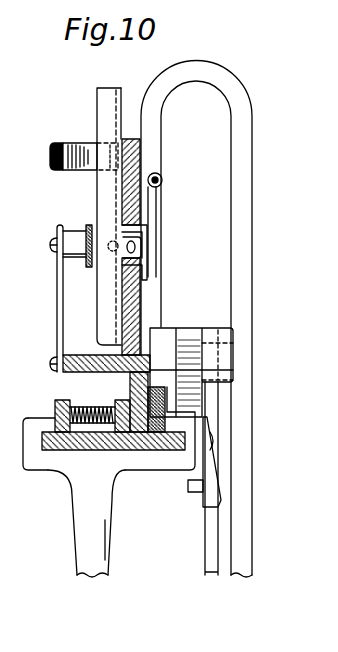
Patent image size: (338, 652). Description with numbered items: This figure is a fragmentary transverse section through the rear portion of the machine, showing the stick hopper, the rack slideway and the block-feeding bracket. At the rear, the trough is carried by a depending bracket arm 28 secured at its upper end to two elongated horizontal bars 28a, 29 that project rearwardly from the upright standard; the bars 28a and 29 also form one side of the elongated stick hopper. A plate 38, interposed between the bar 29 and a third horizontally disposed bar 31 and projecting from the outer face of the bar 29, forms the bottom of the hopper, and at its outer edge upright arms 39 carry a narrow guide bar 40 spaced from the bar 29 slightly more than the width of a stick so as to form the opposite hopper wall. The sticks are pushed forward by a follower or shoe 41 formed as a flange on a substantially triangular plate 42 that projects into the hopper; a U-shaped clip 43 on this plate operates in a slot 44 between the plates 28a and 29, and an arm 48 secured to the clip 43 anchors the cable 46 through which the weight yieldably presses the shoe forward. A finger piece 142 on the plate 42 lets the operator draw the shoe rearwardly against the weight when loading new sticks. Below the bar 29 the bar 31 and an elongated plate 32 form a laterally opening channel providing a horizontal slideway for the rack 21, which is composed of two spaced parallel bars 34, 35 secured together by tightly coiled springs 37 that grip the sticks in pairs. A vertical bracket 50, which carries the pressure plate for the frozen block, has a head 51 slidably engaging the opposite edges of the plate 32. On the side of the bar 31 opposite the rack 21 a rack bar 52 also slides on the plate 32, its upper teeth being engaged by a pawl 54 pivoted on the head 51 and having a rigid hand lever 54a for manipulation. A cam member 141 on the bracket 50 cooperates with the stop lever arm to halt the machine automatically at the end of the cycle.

The depending bracket arm 28 is at (252, 280).
The elongated horizontal bar 28a is at (135, 162).
The elongated horizontal bar 29 is at (138, 307).
The plate 38 is at (78, 356).
The follower or shoe 41 is at (105, 196).
The triangular plate 42 is at (115, 181).
The finger piece 142 is at (68, 143).
The upright arms 39 is at (63, 316).
The guide bar 40 is at (86, 232).
The slot 44 is at (141, 237).
The U-shaped clip 43 is at (137, 251).
The cable 46 is at (163, 181).
The arm 48 is at (157, 202).
The pawl 54 is at (166, 333).
The hand lever 54a is at (210, 539).
The cam member 141 is at (208, 505).
The horizontally disposed bar 31 is at (130, 382).
The rack bar 52 is at (160, 428).
The bar of rack 35 is at (120, 404).
The bar of rack 34 is at (55, 410).
The tightly coiled springs 37 is at (82, 406).
The rack 21 is at (58, 393).
The elongated plate 32 is at (103, 450).
The head 51 is at (52, 465).
The vertical bracket 50 is at (80, 520).